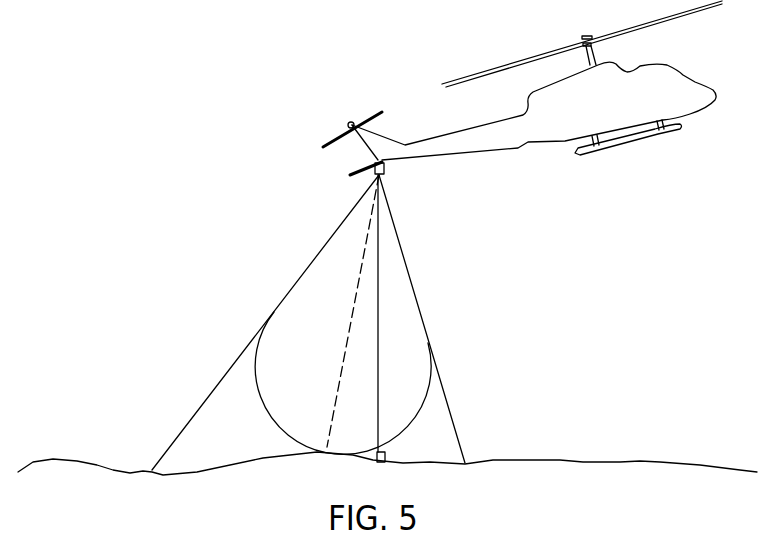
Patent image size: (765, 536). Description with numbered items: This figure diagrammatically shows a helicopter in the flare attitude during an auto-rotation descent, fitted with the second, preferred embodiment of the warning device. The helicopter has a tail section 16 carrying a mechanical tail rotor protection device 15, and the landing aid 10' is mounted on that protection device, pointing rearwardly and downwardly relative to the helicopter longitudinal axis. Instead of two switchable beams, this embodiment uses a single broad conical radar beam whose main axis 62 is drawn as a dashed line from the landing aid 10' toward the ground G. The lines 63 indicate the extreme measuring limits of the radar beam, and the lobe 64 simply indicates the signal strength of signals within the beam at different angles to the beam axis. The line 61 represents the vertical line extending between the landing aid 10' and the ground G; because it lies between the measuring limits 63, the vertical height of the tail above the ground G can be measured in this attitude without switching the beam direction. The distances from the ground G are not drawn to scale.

The landing aid 10' is at (407, 175).
The mechanical tail rotor protection device 15 is at (365, 177).
The tail section 16 is at (474, 152).
The vertical line 61 is at (380, 350).
The main axis 62 is at (345, 350).
The lines indicating extreme measuring limits 63 is at (242, 352).
The lobe 64 is at (267, 412).
The ground G is at (648, 462).